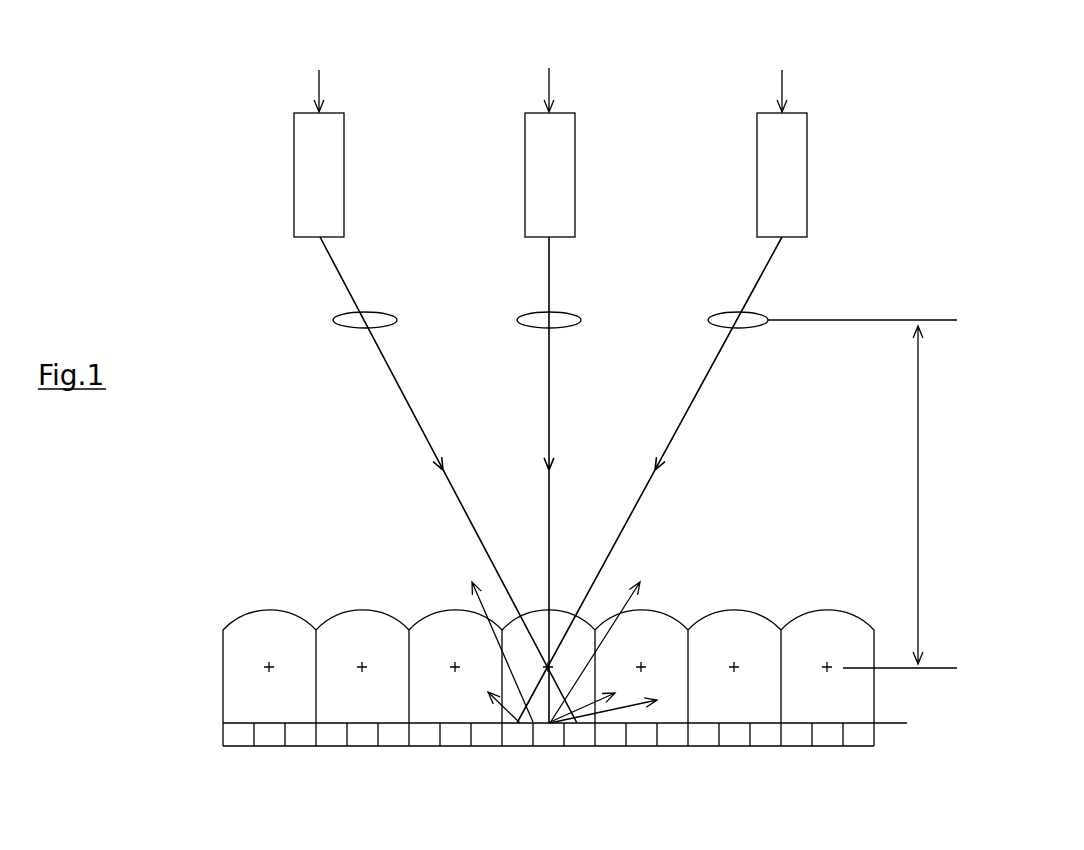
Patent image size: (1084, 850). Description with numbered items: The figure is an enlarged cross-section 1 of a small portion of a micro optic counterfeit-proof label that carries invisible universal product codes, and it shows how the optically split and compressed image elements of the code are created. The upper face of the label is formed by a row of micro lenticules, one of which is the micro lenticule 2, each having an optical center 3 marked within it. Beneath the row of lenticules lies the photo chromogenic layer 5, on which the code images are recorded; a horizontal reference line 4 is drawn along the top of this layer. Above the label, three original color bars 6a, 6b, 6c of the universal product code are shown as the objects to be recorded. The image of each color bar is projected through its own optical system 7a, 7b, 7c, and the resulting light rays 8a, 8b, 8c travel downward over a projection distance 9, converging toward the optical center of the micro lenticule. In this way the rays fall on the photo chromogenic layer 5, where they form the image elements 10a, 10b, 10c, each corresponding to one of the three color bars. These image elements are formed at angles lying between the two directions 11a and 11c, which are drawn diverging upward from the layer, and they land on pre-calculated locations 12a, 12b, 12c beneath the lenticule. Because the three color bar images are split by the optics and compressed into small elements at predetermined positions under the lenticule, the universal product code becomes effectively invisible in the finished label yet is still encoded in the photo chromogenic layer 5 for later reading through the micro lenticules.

The enlarged cross-section of a portion of the label 1 is at (524, 654).
The micro lenticule 2 is at (260, 640).
The optical center of the micro lenticule 3 is at (273, 667).
The sensor surface line 4 is at (576, 717).
The photo chromogenic layer 5 is at (223, 735).
The original color bar of the universal product code 6a is at (319, 132).
The original color bar of the universal product code 6b is at (550, 132).
The original color bar of the universal product code 6c is at (782, 133).
The optical system 7a is at (384, 294).
The optical system 7b is at (572, 294).
The optical system 7c is at (764, 294).
The light ray 8a is at (448, 480).
The light ray 8b is at (528, 480).
The light ray 8c is at (649, 480).
The projection distance 9 is at (862, 494).
The image element 10a is at (594, 744).
The image element 10b is at (558, 750).
The image element 10c is at (523, 750).
The angle limit 11a is at (613, 635).
The angle limit 11c is at (492, 634).
The pre-calculated location 12a is at (629, 700).
The pre-calculated location 12b is at (605, 693).
The pre-calculated location 12c is at (489, 693).